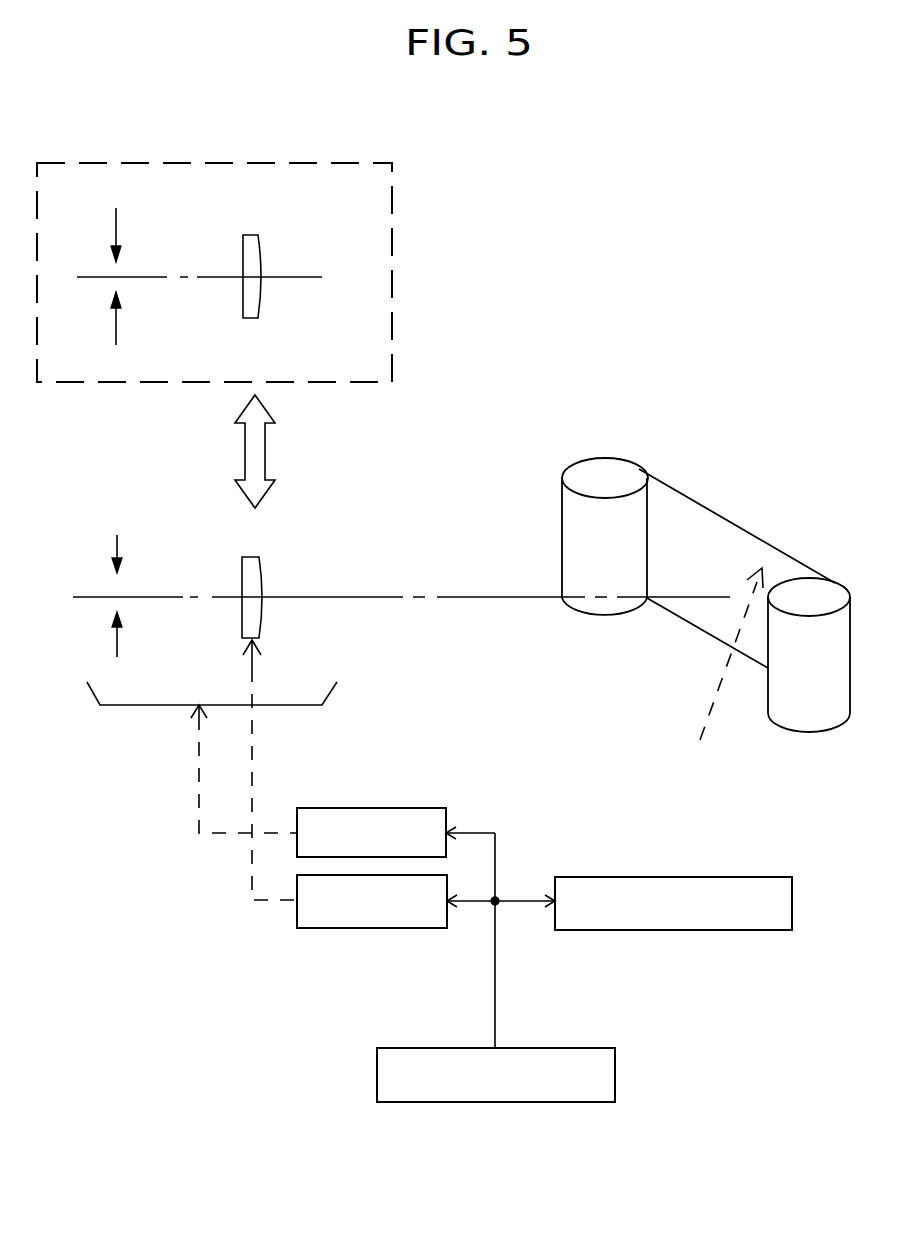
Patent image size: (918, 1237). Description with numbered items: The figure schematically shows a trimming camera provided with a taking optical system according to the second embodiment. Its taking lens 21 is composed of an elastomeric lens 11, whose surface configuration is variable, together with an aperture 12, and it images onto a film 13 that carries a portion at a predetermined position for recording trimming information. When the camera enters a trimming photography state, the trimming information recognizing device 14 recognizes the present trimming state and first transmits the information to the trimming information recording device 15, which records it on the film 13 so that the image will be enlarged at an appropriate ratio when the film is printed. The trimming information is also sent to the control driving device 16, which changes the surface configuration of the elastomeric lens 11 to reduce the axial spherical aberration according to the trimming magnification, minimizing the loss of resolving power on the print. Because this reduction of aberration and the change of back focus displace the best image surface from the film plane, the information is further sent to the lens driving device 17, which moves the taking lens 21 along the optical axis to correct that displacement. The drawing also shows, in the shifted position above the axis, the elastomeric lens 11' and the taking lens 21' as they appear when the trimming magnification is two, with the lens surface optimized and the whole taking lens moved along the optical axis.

The taking lens at trimming magnification of two 21' is at (214, 236).
The elastomeric lens surface configuration at trimming magnification of two 11' is at (215, 247).
The taking lens 21 is at (318, 451).
The elastomeric lens 11 is at (401, 702).
The aperture 12 is at (117, 535).
The film 13 is at (615, 460).
The trimming information recognizing device 14 is at (615, 1102).
The trimming information recording device 15 is at (793, 930).
The control driving device 16 is at (308, 928).
The lens driving device 17 is at (415, 808).